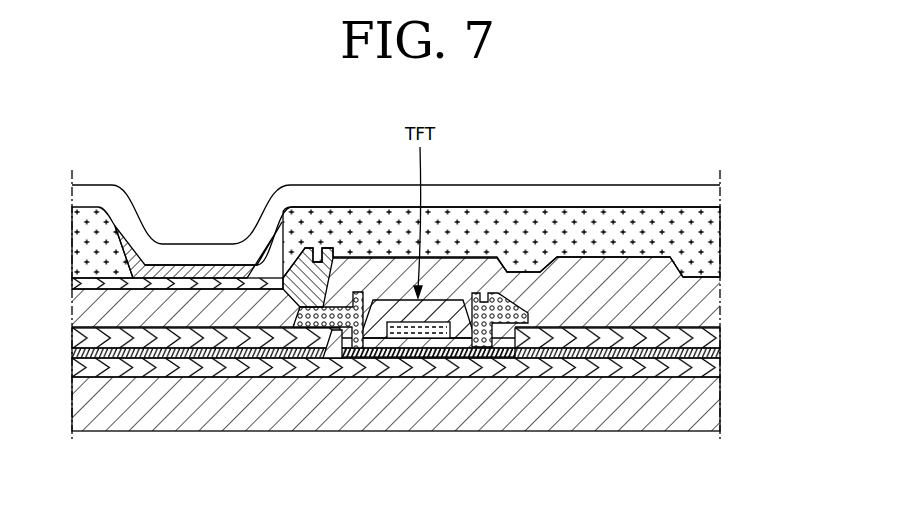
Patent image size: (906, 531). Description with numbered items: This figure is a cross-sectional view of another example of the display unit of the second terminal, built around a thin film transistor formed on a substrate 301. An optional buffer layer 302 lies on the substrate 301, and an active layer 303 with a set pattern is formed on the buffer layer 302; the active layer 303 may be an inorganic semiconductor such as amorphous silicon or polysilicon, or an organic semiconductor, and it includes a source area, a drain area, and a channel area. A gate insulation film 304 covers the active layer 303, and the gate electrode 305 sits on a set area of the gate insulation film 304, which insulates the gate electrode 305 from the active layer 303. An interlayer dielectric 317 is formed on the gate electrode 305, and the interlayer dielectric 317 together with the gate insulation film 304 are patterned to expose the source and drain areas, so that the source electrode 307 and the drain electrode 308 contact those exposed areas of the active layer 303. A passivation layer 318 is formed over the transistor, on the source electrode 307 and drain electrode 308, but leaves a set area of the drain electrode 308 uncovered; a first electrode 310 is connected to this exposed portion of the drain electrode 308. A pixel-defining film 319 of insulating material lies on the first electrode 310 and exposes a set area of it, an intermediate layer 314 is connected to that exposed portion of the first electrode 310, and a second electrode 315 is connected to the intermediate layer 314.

The substrate 301 is at (716, 400).
The buffer layer 302 is at (716, 368).
The active layer 303 is at (462, 350).
The gate insulation film 304 is at (716, 357).
The gate electrode 305 is at (418, 328).
The source electrode 307 is at (492, 325).
The drain electrode 308 is at (335, 313).
The first electrode 310 is at (196, 283).
The intermediate layer 314 is at (137, 247).
The second electrode 315 is at (118, 208).
The interlayer dielectric 317 is at (716, 340).
The passivation layer 318 is at (716, 298).
The pixel-defining film 319 is at (716, 243).